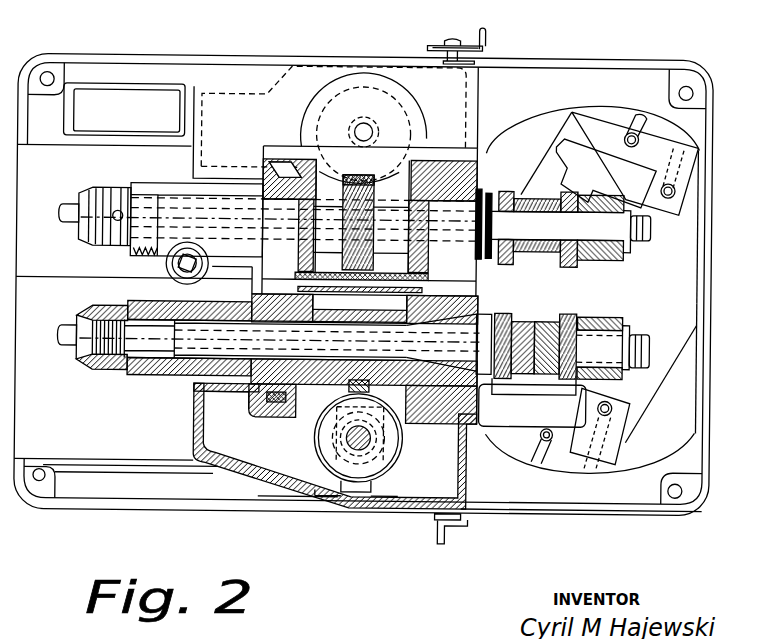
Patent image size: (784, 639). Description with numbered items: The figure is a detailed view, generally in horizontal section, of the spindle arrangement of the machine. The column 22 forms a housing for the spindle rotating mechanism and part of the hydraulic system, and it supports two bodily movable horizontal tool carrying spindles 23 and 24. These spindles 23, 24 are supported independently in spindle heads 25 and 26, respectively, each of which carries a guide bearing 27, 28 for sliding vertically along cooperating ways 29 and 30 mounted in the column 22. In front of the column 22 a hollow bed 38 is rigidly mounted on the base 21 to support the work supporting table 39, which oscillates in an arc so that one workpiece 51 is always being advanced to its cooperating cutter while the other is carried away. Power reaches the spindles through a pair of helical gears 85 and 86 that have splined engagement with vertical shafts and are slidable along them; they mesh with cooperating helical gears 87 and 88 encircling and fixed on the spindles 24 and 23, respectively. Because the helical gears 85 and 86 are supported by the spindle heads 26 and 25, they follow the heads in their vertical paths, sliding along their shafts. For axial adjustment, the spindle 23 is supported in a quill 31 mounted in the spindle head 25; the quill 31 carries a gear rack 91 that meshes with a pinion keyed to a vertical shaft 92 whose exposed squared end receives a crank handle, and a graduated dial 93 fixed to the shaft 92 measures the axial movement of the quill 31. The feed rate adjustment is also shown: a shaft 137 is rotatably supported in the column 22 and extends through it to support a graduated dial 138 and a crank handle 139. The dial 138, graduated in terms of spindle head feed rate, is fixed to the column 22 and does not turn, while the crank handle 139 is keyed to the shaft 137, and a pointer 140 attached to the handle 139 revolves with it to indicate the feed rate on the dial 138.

The base 21 is at (590, 497).
The column 22 is at (295, 497).
The spindle 23 is at (188, 215).
The spindle 24 is at (163, 383).
The spindle head 25 is at (451, 188).
The spindle head 26 is at (470, 298).
The guide bearing 27 is at (297, 160).
The guide bearing 28 is at (290, 422).
The way 29 is at (268, 160).
The way 30 is at (248, 412).
The quill 31 is at (112, 250).
The hollow bed 38 is at (692, 390).
The work supporting table 39 is at (692, 216).
The workpiece 51 is at (565, 128).
The helical gear 85 is at (392, 463).
The helical gear 86 is at (408, 92).
The helical gear 87 is at (370, 400).
The helical gear 88 is at (352, 172).
The gear rack 91 is at (148, 256).
The vertical shaft 92 is at (213, 255).
The graduated dial 93 is at (170, 288).
The shaft 137 is at (455, 40).
The graduated dial 138 is at (430, 47).
The crank handle 139 is at (484, 37).
The pointer 140 is at (433, 44).